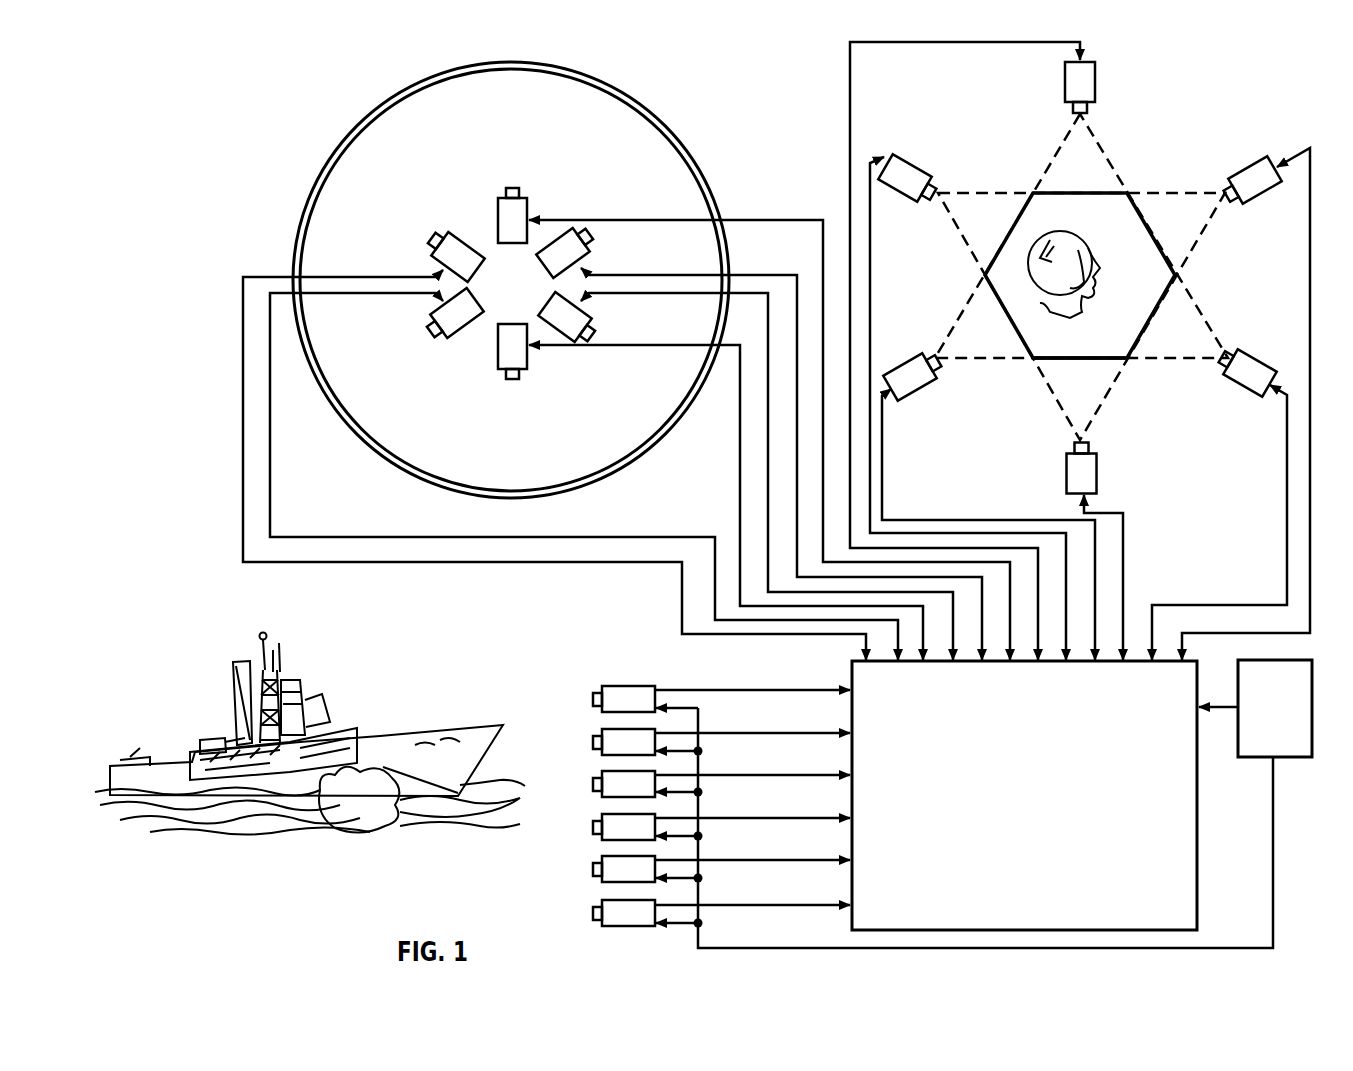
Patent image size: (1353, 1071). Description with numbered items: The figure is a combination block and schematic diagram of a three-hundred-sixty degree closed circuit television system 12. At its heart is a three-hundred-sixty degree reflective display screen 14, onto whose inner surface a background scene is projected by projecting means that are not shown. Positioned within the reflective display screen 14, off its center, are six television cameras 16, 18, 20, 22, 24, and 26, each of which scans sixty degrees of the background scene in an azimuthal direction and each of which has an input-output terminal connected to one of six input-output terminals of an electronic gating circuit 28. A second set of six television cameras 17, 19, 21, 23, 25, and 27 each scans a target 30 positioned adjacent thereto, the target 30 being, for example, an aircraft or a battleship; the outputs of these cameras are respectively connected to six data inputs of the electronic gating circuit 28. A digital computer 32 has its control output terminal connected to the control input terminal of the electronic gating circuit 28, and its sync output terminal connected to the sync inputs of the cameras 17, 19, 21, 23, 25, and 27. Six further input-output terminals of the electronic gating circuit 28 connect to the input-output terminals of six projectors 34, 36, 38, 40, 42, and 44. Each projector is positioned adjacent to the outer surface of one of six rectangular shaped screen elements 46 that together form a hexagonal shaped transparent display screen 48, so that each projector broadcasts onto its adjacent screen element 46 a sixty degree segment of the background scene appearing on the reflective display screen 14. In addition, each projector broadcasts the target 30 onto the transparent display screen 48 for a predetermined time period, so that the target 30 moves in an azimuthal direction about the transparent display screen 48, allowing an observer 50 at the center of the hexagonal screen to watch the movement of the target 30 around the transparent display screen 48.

The 360 degree closed circuit television system 12 is at (708, 176).
The 360 degree reflective display screen 14 is at (366, 130).
The television camera 16 is at (462, 247).
The television camera 17 is at (614, 686).
The television camera 18 is at (448, 332).
The television camera 19 is at (614, 729).
The television camera 20 is at (529, 360).
The television camera 21 is at (614, 771).
The television camera 22 is at (590, 316).
The television camera 23 is at (614, 814).
The television camera 24 is at (586, 260).
The television camera 25 is at (614, 856).
The television camera 26 is at (520, 190).
The television camera 27 is at (614, 900).
The electronic gating circuit 28 is at (985, 787).
The target 30 is at (487, 724).
The digital computer 32 is at (1258, 759).
The projector 34 is at (1097, 80).
The projector 36 is at (902, 163).
The projector 38 is at (915, 362).
The projector 40 is at (1066, 463).
The projector 42 is at (1236, 384).
The projector 44 is at (1268, 194).
The rectangular shaped screen element 46 is at (1096, 190).
The hexagonal shaped transparent display screen 48 is at (1129, 360).
The observer 50 is at (1062, 232).